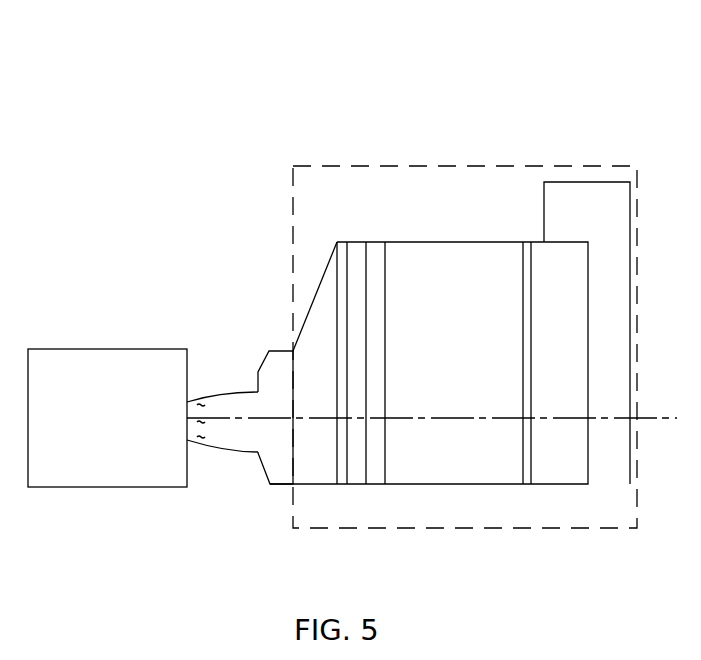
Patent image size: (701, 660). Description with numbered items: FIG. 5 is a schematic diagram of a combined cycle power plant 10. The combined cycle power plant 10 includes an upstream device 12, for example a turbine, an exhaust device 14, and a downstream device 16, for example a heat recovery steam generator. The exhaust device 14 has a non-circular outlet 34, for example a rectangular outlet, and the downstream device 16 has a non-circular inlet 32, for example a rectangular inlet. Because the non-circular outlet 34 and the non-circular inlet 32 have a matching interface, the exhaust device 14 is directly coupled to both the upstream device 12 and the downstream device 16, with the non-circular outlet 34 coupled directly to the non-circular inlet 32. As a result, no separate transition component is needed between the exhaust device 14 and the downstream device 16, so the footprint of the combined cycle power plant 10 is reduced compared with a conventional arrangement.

The combined cycle power plant 10 is at (116, 51).
The upstream device 12 is at (107, 348).
The exhaust device 14 is at (257, 460).
The downstream device 16 is at (450, 166).
The non-circular inlet 32 is at (293, 458).
The non-circular outlet 34 is at (294, 367).